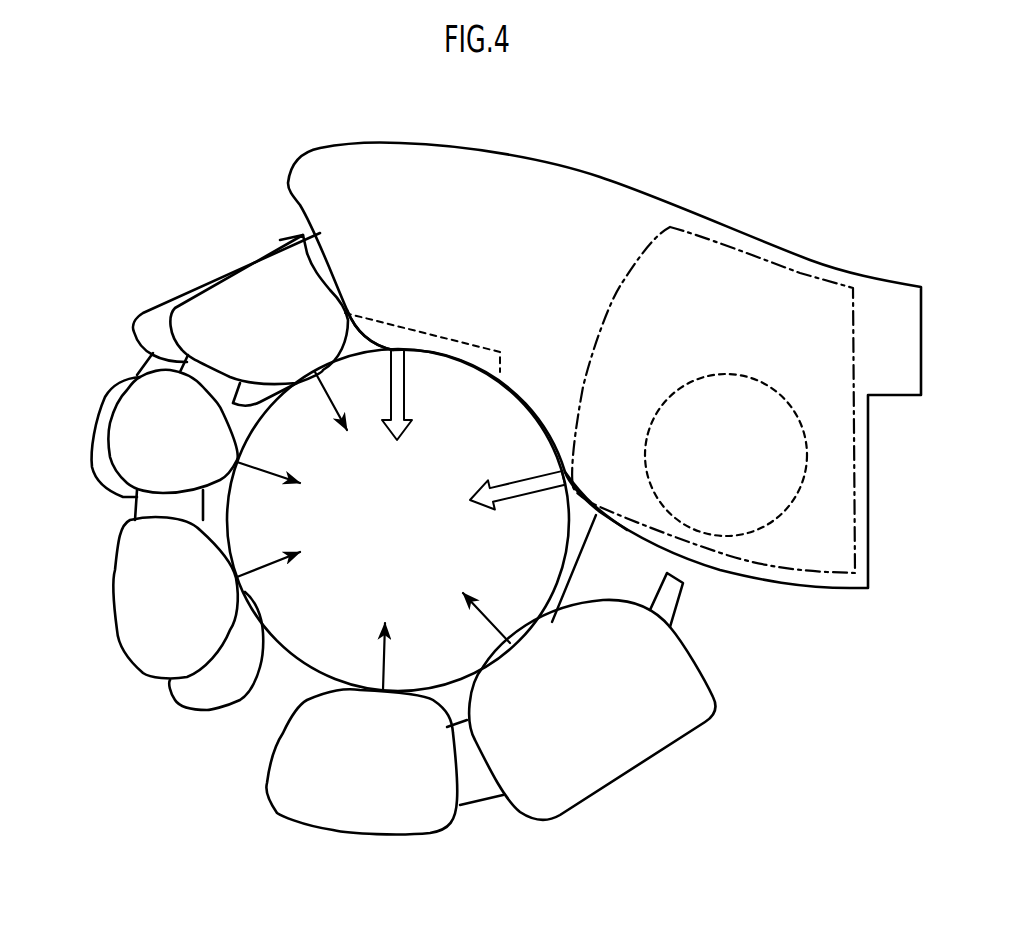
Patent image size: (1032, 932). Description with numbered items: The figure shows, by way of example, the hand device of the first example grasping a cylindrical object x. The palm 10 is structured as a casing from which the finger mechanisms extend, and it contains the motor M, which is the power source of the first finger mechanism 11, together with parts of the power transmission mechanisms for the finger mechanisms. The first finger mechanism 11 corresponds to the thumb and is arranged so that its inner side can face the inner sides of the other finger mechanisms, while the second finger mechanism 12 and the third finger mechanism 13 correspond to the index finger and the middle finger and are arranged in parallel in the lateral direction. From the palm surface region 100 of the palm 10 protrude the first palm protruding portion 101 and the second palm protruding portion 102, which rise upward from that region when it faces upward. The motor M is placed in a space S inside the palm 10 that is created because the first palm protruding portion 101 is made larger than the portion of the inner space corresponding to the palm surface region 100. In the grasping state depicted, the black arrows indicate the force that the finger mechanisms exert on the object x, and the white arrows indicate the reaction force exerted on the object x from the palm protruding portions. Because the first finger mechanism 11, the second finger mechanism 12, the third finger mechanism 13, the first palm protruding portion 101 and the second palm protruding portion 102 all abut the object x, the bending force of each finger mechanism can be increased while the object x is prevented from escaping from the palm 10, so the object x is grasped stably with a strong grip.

The palm 10 is at (600, 158).
The palm surface region 100 is at (425, 330).
The first palm protruding portion 101 is at (567, 470).
The second palm protruding portion 102 is at (377, 332).
The first finger mechanism 11 is at (287, 827).
The second finger mechanism 12 is at (103, 602).
The third finger mechanism 13 is at (172, 713).
The space S is at (797, 327).
The motor M is at (762, 527).
The object X is at (406, 536).